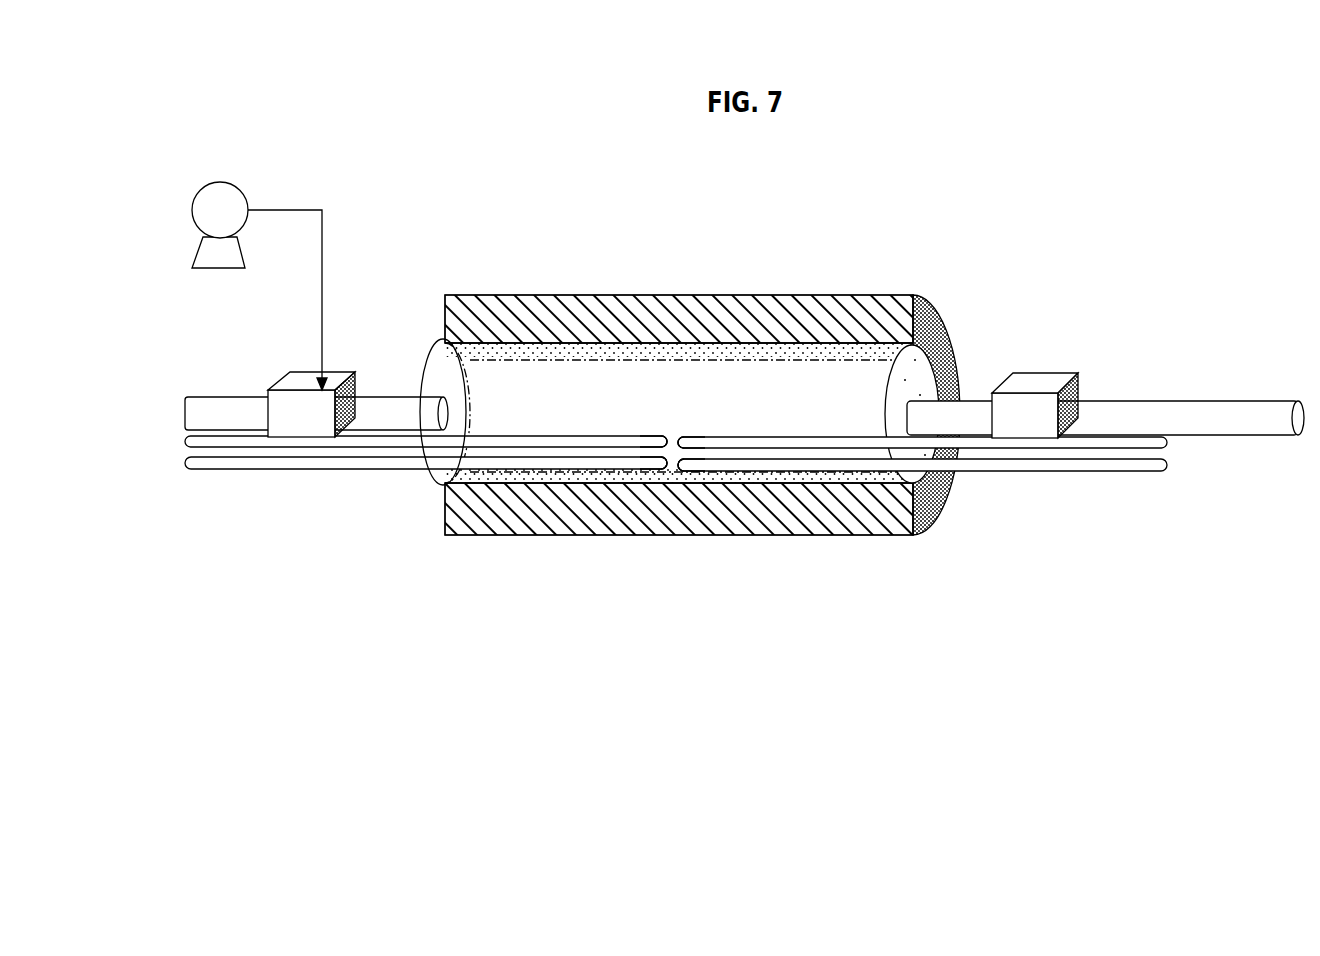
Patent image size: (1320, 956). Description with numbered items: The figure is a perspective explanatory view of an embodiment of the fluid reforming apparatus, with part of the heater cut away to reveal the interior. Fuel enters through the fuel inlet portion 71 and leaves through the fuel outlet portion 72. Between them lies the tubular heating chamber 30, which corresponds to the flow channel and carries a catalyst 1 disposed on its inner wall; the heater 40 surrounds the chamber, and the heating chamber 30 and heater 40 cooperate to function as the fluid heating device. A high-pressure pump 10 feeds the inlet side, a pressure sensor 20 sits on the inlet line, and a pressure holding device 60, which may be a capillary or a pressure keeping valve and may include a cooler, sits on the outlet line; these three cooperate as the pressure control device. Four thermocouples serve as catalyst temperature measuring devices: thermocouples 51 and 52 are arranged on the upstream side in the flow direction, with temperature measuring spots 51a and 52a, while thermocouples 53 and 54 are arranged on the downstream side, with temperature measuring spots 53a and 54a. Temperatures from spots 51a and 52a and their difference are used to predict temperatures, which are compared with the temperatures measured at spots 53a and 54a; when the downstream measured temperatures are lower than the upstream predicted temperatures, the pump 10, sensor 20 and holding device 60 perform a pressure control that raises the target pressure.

The catalyst 1 is at (675, 470).
The high-pressure pump 10 is at (220, 190).
The pressure sensor 20 is at (290, 372).
The tubular heating chamber 30 is at (942, 326).
The heater 40 is at (683, 297).
The thermocouple 51 is at (183, 460).
The temperature measuring spot 51a is at (640, 462).
The thermocouple 52 is at (185, 441).
The temperature measuring spot 52a is at (597, 443).
The thermocouple 53 is at (1167, 466).
The temperature measuring spot 53a is at (695, 466).
The thermocouple 54 is at (1167, 443).
The temperature measuring spot 54a is at (793, 443).
The pressure holding device 60 is at (1052, 377).
The fuel inlet portion 71 is at (215, 398).
The fuel outlet portion 72 is at (1178, 402).